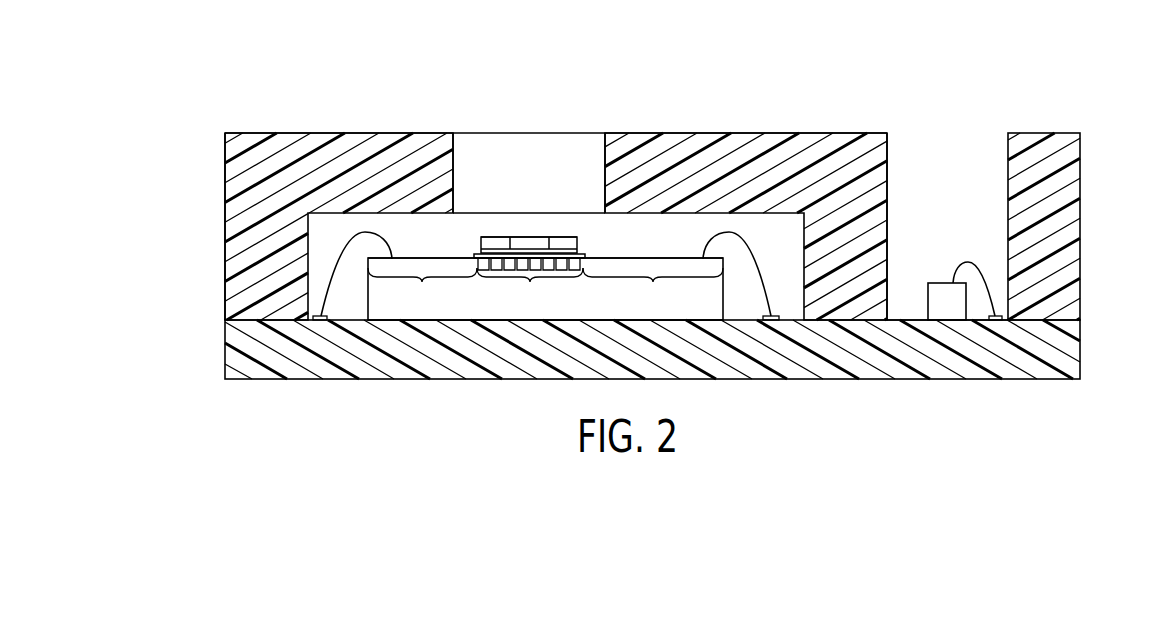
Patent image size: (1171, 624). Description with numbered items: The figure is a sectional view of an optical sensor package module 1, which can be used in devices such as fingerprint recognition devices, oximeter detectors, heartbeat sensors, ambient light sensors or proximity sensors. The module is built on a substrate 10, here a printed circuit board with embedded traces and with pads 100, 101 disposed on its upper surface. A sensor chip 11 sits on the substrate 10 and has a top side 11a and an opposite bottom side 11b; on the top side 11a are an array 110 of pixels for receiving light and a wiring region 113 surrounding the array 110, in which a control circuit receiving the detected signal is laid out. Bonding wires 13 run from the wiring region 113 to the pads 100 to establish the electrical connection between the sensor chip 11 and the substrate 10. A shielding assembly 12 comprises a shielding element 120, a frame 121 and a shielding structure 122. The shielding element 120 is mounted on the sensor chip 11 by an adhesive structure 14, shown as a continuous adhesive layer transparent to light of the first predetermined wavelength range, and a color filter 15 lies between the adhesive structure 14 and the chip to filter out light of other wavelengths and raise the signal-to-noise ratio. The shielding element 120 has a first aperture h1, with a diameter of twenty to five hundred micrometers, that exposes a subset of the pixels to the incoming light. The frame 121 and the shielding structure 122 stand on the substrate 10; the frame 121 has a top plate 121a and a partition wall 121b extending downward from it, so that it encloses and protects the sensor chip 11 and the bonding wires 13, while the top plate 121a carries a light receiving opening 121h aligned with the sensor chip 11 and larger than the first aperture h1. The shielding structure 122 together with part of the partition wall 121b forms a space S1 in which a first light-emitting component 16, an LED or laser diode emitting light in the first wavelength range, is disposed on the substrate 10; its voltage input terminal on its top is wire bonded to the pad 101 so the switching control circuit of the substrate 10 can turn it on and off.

The optical sensor package module 1 is at (1083, 65).
The substrate 10 is at (1070, 351).
The pad 100 is at (320, 321).
The pad 101 is at (996, 321).
The sensor chip 11 is at (385, 303).
The top side 11a is at (663, 257).
The bottom side 11b is at (557, 322).
The array of pixels 110 is at (530, 285).
The wiring region 113 is at (545, 290).
The shielding assembly 12 is at (136, 0).
The shielding element 120 is at (495, 242).
The frame 121 is at (134, 185).
The top plate 121a is at (337, 153).
The partition wall 121b is at (262, 227).
The light receiving opening 121h is at (452, 172).
The shielding structure 122 is at (1113, 160).
The bonding wire 13 is at (742, 235).
The adhesive structure 14 is at (587, 253).
The color filter 15 is at (585, 257).
The first light-emitting component 16 is at (940, 293).
The first aperture h1 is at (530, 236).
The space S1 is at (950, 156).